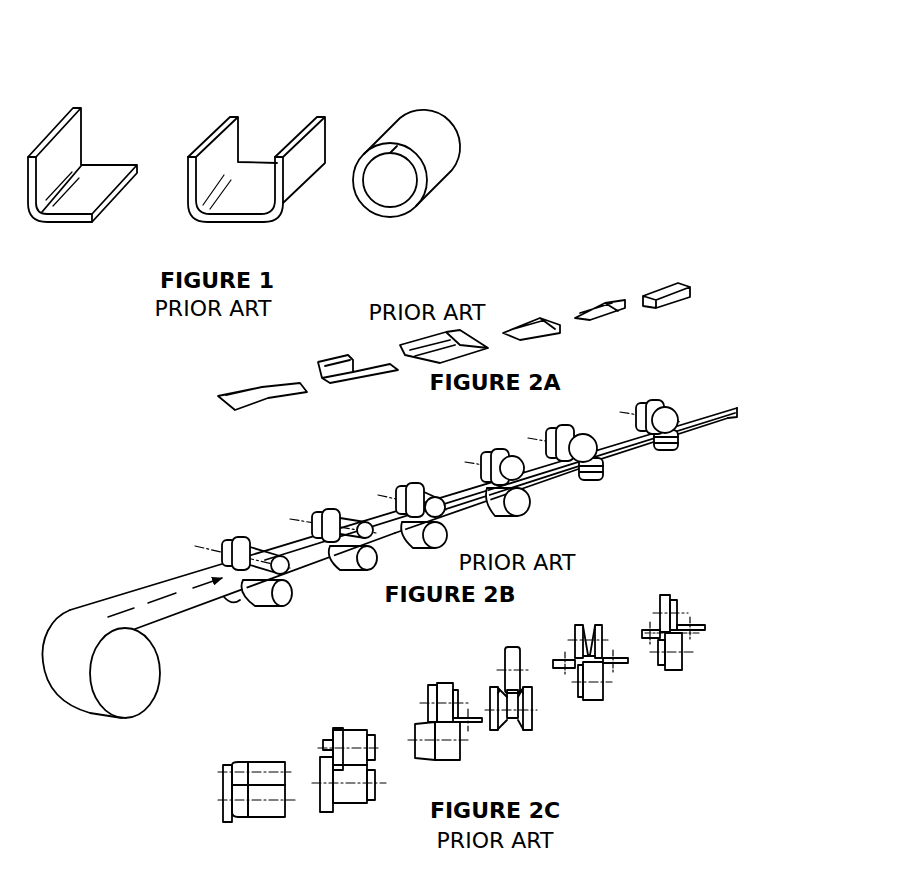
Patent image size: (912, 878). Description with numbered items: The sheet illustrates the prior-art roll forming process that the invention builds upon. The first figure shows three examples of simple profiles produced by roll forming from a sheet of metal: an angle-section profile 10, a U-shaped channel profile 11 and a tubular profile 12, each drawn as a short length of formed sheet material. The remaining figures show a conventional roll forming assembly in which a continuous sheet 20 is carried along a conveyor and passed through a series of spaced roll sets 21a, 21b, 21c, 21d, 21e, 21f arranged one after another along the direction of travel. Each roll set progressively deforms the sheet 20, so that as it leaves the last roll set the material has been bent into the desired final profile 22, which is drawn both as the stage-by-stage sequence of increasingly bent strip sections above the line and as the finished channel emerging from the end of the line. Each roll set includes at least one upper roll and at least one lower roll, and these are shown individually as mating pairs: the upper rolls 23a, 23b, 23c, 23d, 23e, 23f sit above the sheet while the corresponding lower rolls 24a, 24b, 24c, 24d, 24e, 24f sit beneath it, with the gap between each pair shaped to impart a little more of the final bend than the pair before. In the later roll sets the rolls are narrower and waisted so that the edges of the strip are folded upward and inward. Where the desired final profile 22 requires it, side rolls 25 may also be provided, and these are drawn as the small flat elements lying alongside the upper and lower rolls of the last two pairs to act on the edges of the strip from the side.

In FIG. 1, the profile 10 is at (110, 106).
In FIG. 1, the profile 11 is at (262, 110).
In FIG. 1, the profile 12 is at (478, 178).
In FIG. 2B, the continuous sheet 20 is at (142, 587).
In FIG. 2B, the roll set 21a is at (246, 521).
In FIG. 2B, the roll set 21b is at (330, 494).
In FIG. 2B, the roll set 21c is at (389, 485).
In FIG. 2B, the roll set 21d is at (474, 462).
In FIG. 2B, the roll set 21e is at (578, 430).
In FIG. 2B, the roll set 21f is at (668, 395).
In FIG. 2A, the final profile 22 is at (665, 283).
In FIG. 2B, the final profile 22 is at (712, 427).
In FIG. 2C, the upper roll 23a is at (262, 760).
In FIG. 2C, the upper roll 23b is at (350, 727).
In FIG. 2C, the upper roll 23c is at (433, 684).
In FIG. 2C, the upper roll 23d is at (507, 650).
In FIG. 2C, the upper roll 23e is at (578, 622).
In FIG. 2C, the upper roll 23f is at (677, 600).
In FIG. 2C, the lower roll 24a is at (275, 818).
In FIG. 2C, the lower roll 24b is at (343, 805).
In FIG. 2C, the lower roll 24c is at (464, 750).
In FIG. 2C, the lower roll 24d is at (534, 721).
In FIG. 2C, the lower roll 24e is at (604, 696).
In FIG. 2C, the lower roll 24f is at (680, 672).
In FIG. 2C, the side rolls 25 is at (620, 664).